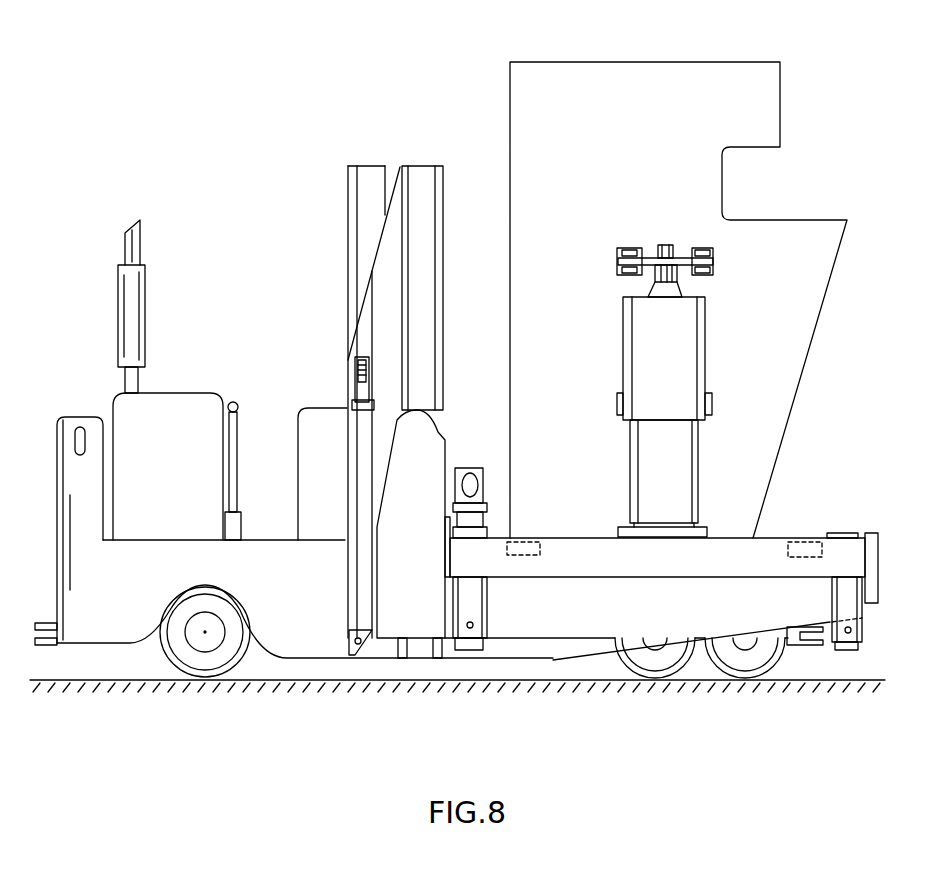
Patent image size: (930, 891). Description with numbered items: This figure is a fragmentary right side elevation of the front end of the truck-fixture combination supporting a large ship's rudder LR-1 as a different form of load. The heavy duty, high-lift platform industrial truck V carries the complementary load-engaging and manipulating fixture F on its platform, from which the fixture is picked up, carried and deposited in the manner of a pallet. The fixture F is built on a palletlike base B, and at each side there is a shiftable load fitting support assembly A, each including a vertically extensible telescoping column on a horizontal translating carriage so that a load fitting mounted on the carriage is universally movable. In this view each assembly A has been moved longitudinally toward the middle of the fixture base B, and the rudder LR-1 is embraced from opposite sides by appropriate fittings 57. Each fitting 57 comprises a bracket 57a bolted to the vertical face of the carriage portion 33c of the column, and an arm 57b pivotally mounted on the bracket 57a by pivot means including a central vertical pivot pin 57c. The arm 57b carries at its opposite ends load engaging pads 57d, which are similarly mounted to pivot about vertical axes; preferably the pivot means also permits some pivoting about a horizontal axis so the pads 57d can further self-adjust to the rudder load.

The ship's rudder LR-1 is at (714, 58).
The industrial truck V is at (423, 648).
The load-engaging and manipulating fixture F is at (603, 560).
The load fitting support assembly A is at (627, 512).
The palletlike base B is at (797, 531).
The cylinder 33c is at (685, 352).
The fitting 57 is at (630, 283).
The bracket 57a is at (670, 297).
The arm 57b is at (690, 275).
The central vertical pivot pin 57c is at (665, 245).
The load engaging pad 57d is at (618, 258).